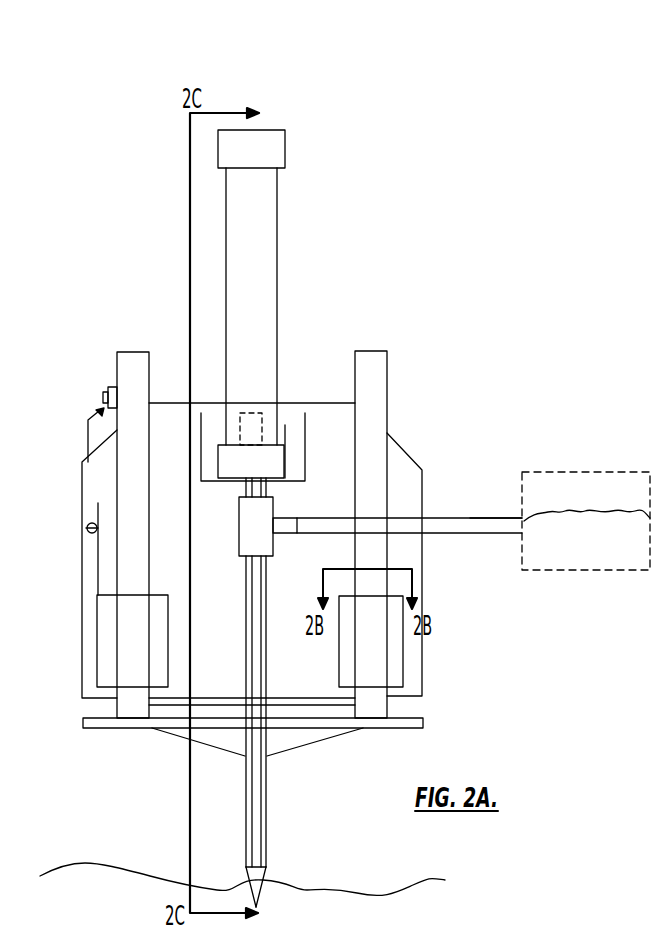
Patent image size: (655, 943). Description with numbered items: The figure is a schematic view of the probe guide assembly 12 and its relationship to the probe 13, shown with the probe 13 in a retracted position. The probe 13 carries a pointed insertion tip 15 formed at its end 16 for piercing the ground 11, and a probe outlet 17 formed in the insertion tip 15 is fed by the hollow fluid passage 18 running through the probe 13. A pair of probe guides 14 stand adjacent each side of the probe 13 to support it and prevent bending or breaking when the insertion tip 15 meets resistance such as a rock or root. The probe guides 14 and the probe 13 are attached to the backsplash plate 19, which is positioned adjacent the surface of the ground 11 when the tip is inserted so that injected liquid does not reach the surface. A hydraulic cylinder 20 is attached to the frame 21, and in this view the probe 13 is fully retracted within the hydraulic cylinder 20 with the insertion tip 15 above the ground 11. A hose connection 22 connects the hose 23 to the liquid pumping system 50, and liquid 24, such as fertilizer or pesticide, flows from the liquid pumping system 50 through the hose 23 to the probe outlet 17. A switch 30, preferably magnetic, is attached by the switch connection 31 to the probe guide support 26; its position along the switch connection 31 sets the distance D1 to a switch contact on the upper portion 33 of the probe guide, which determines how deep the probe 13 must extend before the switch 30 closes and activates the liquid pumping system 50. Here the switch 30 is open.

The ground 11 is at (409, 887).
The probe guide assembly 12 is at (151, 138).
The probe 13 is at (275, 798).
The probe guides 14 is at (130, 352).
The insertion tip 15 is at (263, 875).
The end 16 is at (263, 858).
The probe outlet 17 is at (245, 877).
The hollow fluid passage 18 is at (256, 778).
The backsplash plate 19 is at (422, 728).
The hydraulic cylinder 20 is at (277, 228).
The frame 21 is at (308, 403).
The hose connection 22 is at (280, 518).
The hose 23 is at (441, 518).
The liquid 24 is at (490, 518).
The probe guide support 26 is at (117, 638).
The switch 30 is at (105, 543).
The switch connection 31 is at (93, 553).
The upper portion 33 is at (149, 378).
The liquid pumping system 50 is at (585, 572).
The distance D1 is at (76, 445).